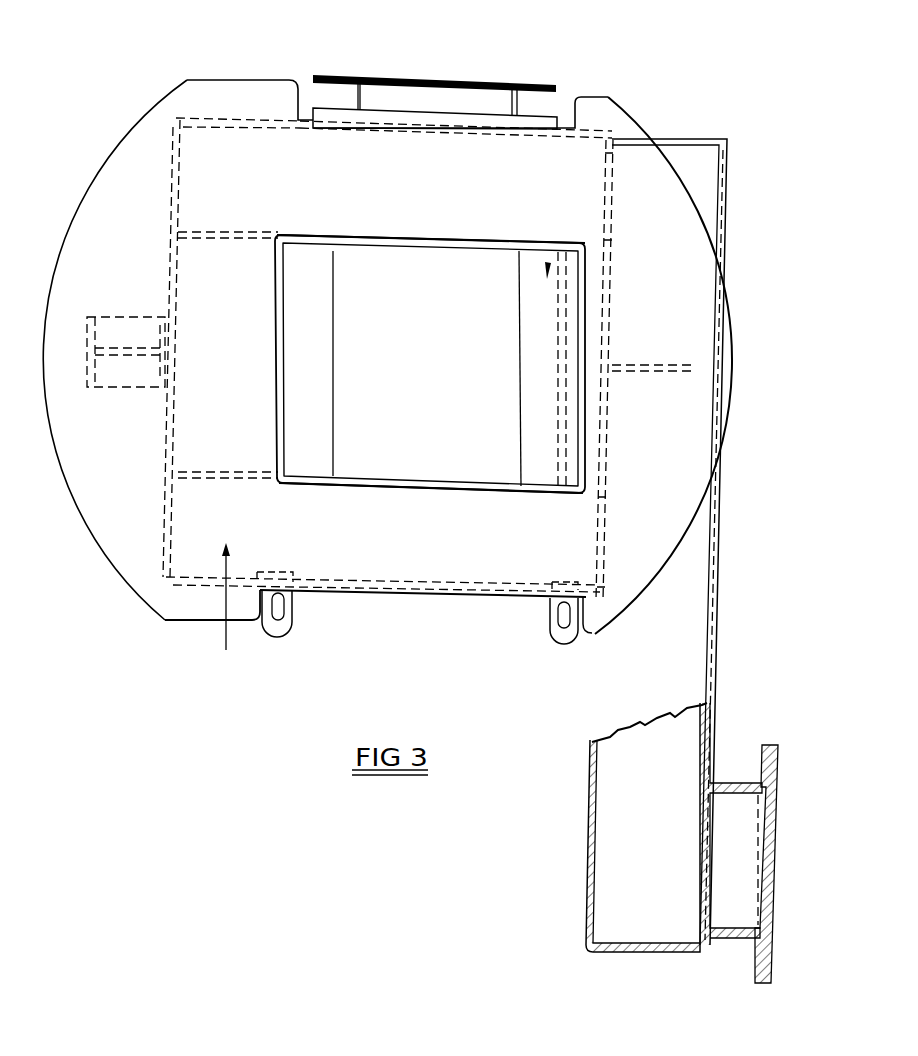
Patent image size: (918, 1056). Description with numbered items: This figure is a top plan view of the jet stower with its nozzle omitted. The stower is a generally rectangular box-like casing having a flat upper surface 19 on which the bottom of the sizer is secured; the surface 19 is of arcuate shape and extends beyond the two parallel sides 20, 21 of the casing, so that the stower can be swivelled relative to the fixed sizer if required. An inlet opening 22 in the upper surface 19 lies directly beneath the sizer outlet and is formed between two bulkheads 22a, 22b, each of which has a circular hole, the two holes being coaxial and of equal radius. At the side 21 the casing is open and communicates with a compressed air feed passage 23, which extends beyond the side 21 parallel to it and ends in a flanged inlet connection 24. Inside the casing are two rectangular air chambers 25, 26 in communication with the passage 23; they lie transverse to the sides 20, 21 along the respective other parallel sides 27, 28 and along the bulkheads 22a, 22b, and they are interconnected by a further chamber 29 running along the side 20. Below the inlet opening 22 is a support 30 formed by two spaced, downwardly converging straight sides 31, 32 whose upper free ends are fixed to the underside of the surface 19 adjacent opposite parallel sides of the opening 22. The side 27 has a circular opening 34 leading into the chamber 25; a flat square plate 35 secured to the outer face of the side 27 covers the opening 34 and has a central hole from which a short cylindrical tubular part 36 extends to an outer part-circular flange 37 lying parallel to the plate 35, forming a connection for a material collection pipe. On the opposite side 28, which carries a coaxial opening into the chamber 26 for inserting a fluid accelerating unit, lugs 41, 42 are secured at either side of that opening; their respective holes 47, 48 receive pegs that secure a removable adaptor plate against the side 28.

The flat upper surface 19 is at (223, 612).
The side 20 is at (165, 487).
The side 21 is at (612, 187).
The inlet opening 22 is at (470, 360).
The bulkhead 22a is at (430, 242).
The bulkhead 22b is at (441, 482).
The compressed air feed passage 23 is at (695, 557).
The flanged inlet connection 24 is at (733, 935).
The air chamber 25 is at (228, 141).
The air chamber 26 is at (495, 558).
The side 27 is at (270, 118).
The side 28 is at (198, 590).
The further chamber 29 is at (192, 297).
The support 30 is at (551, 250).
The straight side 31 is at (307, 250).
The straight side 32 is at (545, 322).
The circular opening 34 is at (348, 130).
The flat square plate 35 is at (531, 137).
The cylindrical tubular part 36 is at (463, 98).
The part-circular flange 37 is at (355, 77).
The lug 41 is at (283, 634).
The lug 42 is at (566, 646).
The hole 47 is at (280, 606).
The hole 48 is at (557, 620).